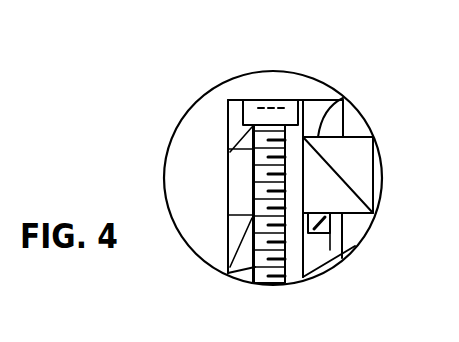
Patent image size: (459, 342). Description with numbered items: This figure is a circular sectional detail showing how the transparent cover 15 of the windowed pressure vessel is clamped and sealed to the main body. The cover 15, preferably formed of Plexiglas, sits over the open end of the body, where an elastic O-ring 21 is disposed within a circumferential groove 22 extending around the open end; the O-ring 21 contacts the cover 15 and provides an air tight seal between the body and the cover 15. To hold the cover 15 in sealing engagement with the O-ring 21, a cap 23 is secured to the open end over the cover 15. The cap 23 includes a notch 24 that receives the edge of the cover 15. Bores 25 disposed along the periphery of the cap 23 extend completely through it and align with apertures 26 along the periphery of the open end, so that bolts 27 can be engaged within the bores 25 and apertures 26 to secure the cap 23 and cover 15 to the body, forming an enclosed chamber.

The transparent cover 15 is at (380, 157).
The O-ring 21 is at (319, 232).
The circumferential groove 22 is at (352, 251).
The cap 23 is at (305, 100).
The notch 24 is at (343, 98).
The bores 25 is at (252, 175).
The apertures 26 is at (228, 273).
The bolts 27 is at (245, 100).